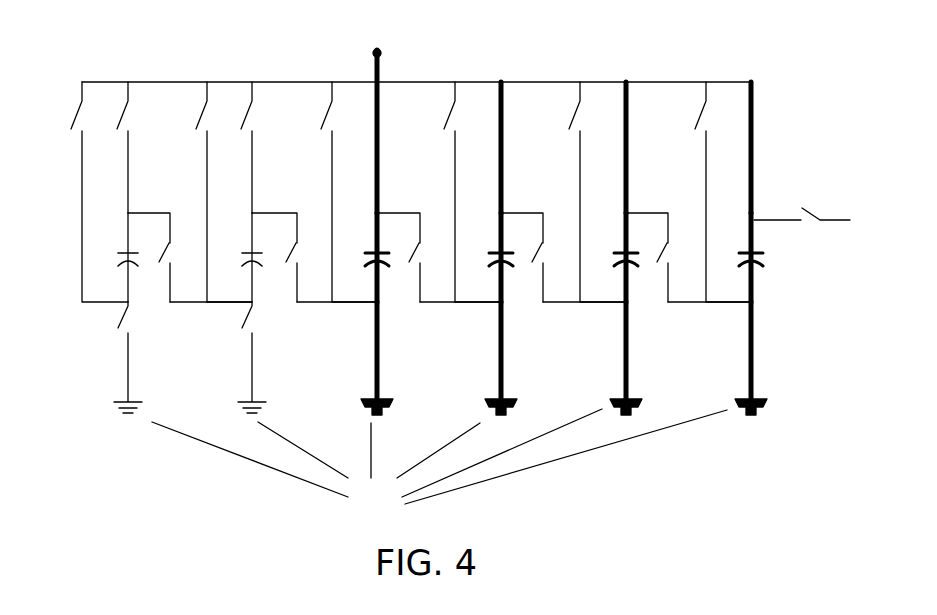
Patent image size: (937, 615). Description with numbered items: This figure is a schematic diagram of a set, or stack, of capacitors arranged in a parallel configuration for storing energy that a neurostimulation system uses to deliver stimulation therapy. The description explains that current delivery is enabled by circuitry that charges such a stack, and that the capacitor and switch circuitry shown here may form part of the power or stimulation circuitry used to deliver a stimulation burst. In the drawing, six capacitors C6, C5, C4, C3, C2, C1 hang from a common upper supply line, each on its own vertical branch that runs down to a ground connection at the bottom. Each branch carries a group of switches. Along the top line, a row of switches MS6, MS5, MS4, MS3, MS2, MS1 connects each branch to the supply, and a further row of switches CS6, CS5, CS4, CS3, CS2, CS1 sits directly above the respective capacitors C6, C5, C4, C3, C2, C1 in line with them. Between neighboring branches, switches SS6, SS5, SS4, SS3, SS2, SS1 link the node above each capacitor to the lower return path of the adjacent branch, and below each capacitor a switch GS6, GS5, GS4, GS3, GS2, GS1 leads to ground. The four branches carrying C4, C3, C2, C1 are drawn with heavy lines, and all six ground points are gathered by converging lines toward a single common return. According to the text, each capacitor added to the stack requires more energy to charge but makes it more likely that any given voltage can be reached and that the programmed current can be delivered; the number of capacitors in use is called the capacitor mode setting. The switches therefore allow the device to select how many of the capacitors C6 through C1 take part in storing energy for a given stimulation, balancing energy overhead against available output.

The main switch 6 MS6 is at (55, 132).
The main switch 5 MS5 is at (180, 132).
The main switch 4 MS4 is at (305, 132).
The main switch 3 MS3 is at (428, 132).
The main switch 2 MS2 is at (553, 132).
The main switch 1 MS1 is at (679, 132).
The capacitor switch 6 CS6 is at (135, 128).
The capacitor switch 5 CS5 is at (259, 128).
The capacitor switch 4 CS4 is at (388, 128).
The capacitor switch 3 CS3 is at (512, 128).
The capacitor switch 2 CS2 is at (637, 128).
The capacitor switch 1 CS1 is at (763, 139).
The capacitor 6 C6 is at (113, 257).
The capacitor 5 C5 is at (237, 257).
The capacitor 4 C4 is at (363, 257).
The capacitor 3 C3 is at (487, 257).
The capacitor 2 C2 is at (612, 257).
The capacitor 1 C1 is at (737, 257).
The series switch 6 SS6 is at (157, 270).
The series switch 5 SS5 is at (284, 270).
The series switch 4 SS4 is at (407, 270).
The series switch 3 SS3 is at (530, 270).
The series switch 2 SS2 is at (655, 270).
The series switch 1 SS1 is at (812, 228).
The ground switch 6 GS6 is at (118, 338).
The ground switch 5 GS5 is at (242, 338).
The ground switch 4 GS4 is at (367, 342).
The ground switch 3 GS3 is at (491, 342).
The ground switch 2 GS2 is at (616, 342).
The ground switch 1 GS1 is at (741, 342).